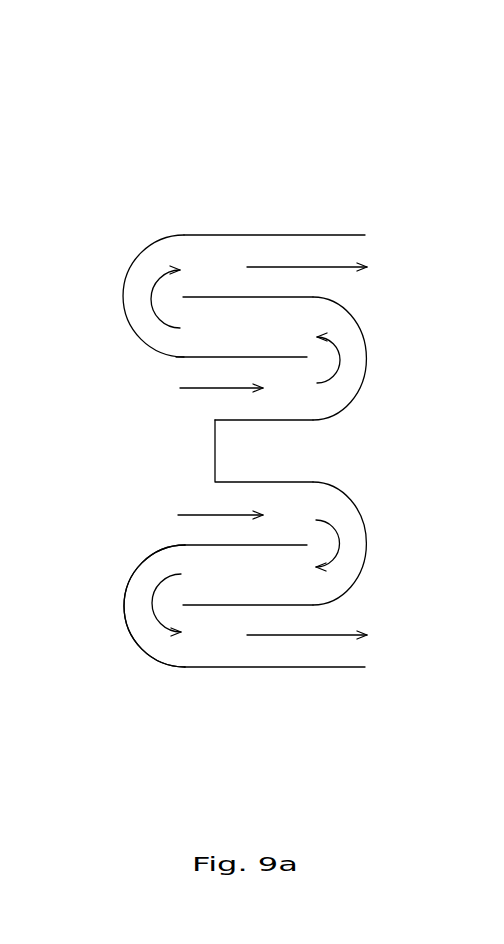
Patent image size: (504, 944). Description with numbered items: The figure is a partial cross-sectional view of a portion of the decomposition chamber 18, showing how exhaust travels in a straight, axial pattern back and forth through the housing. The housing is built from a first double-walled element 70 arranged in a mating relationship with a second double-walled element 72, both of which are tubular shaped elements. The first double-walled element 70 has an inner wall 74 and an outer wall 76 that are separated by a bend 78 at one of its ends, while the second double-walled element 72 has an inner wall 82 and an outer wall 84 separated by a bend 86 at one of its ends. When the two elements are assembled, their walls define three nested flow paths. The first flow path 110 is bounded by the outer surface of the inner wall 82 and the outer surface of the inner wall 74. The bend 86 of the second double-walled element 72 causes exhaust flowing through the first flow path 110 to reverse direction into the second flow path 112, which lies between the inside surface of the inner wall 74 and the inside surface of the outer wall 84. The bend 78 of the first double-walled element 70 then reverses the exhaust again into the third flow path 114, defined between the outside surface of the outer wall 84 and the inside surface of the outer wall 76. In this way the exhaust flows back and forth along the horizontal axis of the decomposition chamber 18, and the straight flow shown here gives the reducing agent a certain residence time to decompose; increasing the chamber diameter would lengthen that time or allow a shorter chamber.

The decomposition chamber 18 is at (275, 125).
The first double-walled element 70 is at (150, 553).
The second double-walled element 72 is at (310, 295).
The inner wall 74 is at (194, 359).
The outer wall 76 is at (235, 232).
The bend 78 is at (122, 268).
The inner wall 82 is at (313, 422).
The outer wall 84 is at (262, 295).
The bend 86 is at (367, 352).
The first flow path 110 is at (275, 388).
The second flow path 112 is at (203, 332).
The third flow path 114 is at (205, 258).